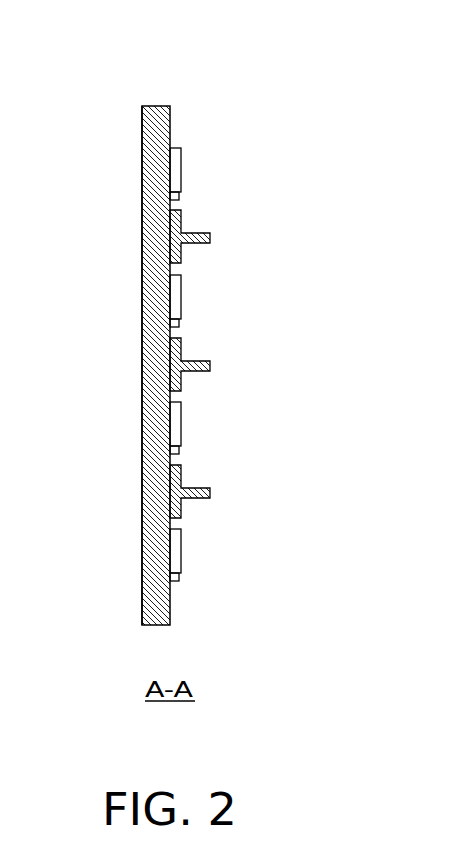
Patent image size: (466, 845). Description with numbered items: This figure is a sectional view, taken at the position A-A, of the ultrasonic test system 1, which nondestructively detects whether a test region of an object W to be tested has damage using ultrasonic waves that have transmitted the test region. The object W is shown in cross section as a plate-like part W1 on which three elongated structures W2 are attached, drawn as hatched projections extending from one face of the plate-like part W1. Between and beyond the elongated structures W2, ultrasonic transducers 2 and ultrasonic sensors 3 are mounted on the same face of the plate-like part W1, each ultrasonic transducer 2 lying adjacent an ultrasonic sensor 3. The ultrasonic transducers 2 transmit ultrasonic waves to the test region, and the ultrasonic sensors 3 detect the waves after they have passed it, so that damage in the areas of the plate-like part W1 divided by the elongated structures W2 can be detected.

The ultrasonic test system 1 is at (286, 88).
The object to be tested W is at (140, 261).
The plate-like part W1 is at (142, 353).
The elongated structure W2 is at (210, 241).
The ultrasonic transducer 2 is at (181, 163).
The ultrasonic sensor 3 is at (181, 198).